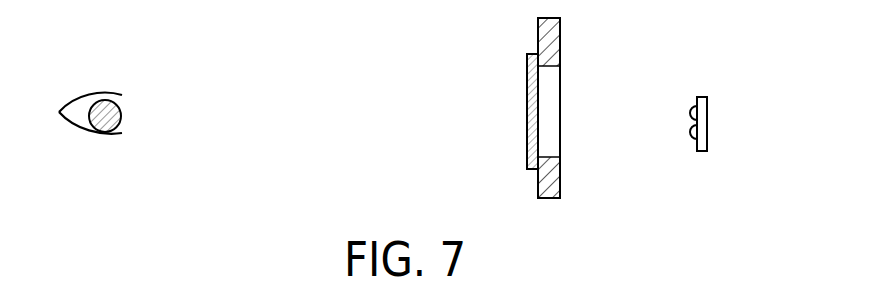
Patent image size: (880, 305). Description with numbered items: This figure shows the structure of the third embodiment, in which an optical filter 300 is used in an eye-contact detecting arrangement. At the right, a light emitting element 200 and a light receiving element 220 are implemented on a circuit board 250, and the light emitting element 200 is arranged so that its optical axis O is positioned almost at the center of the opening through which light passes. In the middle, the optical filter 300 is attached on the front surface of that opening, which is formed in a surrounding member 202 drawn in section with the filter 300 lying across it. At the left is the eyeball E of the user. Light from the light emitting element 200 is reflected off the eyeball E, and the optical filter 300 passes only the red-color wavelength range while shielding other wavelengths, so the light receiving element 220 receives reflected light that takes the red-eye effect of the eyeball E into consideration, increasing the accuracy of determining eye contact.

The eyeball E is at (103, 102).
The display housing / frame 202 is at (562, 75).
The optical filter 300 is at (526, 64).
The circuit board 250 is at (707, 93).
The light emitting element 200 is at (689, 111).
The light receiving element 220 is at (692, 143).
The optical axis O is at (747, 115).